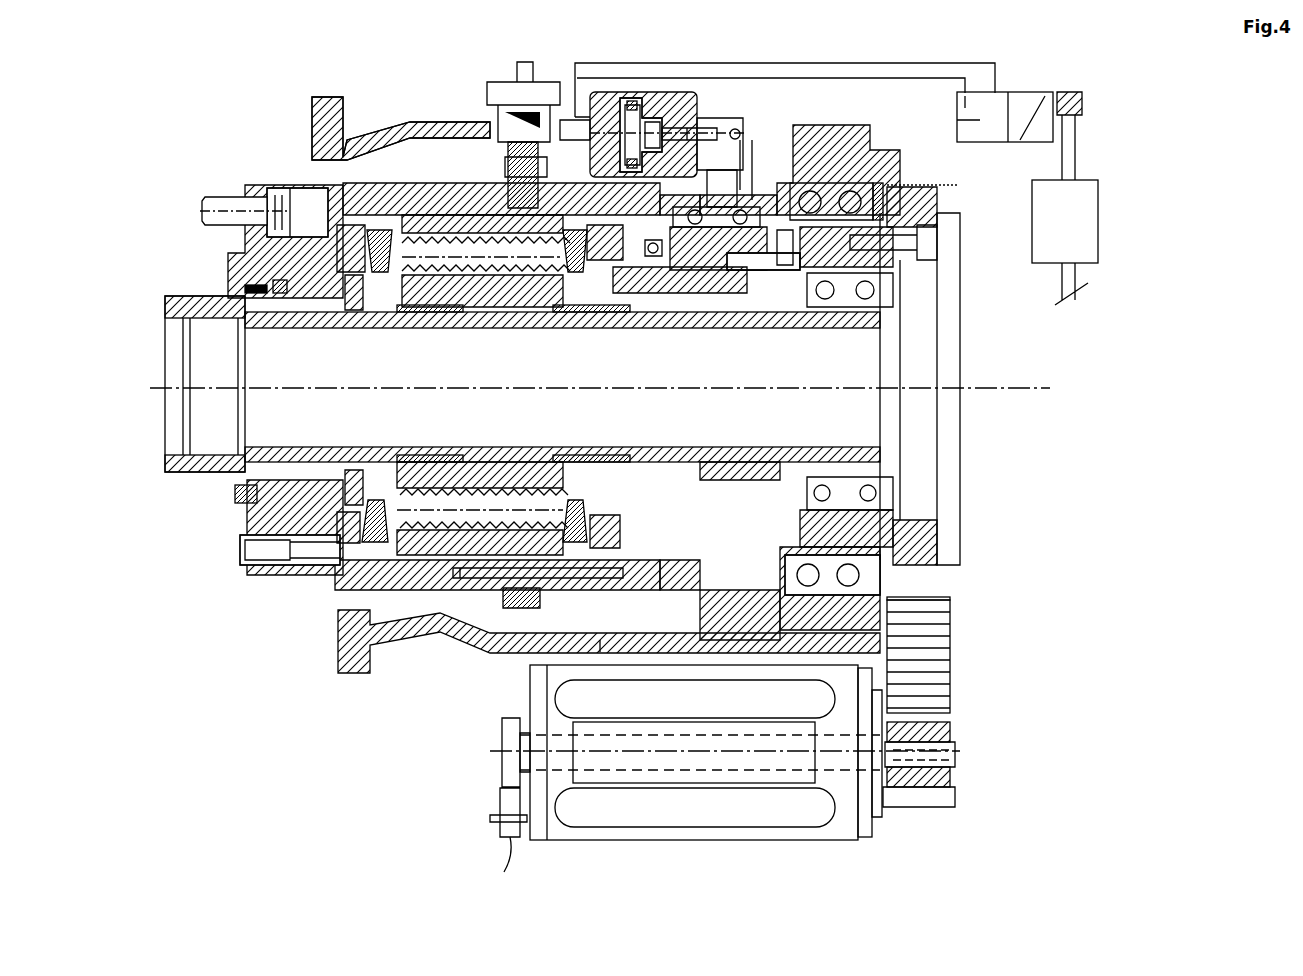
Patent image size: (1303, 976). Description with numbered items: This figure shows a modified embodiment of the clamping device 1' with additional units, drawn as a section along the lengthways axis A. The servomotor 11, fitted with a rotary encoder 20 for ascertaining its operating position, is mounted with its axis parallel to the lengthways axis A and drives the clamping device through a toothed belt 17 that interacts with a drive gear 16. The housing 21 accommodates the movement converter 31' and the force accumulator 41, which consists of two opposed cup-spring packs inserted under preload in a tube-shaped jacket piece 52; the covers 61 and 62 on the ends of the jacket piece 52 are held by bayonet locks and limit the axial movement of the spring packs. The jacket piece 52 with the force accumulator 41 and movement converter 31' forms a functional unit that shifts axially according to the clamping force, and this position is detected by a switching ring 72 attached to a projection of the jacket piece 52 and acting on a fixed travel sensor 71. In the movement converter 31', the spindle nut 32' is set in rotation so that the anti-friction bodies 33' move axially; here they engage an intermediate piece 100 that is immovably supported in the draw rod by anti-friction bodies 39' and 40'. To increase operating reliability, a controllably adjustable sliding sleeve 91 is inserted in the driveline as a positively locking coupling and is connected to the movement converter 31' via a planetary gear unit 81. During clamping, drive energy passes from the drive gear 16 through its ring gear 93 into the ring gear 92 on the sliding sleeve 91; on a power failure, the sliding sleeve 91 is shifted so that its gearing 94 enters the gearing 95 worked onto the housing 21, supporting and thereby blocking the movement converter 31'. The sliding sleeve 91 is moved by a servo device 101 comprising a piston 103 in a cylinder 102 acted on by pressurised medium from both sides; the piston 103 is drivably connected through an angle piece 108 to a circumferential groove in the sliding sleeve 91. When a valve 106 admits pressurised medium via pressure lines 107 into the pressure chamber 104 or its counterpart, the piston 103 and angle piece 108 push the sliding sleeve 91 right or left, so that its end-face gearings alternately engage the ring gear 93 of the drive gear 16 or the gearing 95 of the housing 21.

The clamping device 1' is at (522, 514).
The servomotor 11 is at (645, 838).
The drive gear 16 is at (955, 200).
The toothed belt 17 is at (955, 685).
The rotary encoder 20 is at (500, 802).
The housing 21 is at (375, 180).
The movement converter 31' is at (366, 384).
The spindle nut 32' is at (480, 385).
The anti-friction bodies 33' is at (513, 382).
The anti-friction bodies 39' is at (384, 386).
The anti-friction bodies 40' is at (786, 411).
The force accumulator 41 is at (333, 257).
The jacket piece 52 is at (440, 213).
The cover 61 is at (260, 540).
The cover 62 is at (595, 562).
The travel sensor 71 is at (505, 115).
The switching ring 72 is at (578, 600).
The planetary gear unit 81 is at (575, 655).
The sliding sleeve 91 is at (762, 250).
The ring gear 92 is at (775, 150).
The ring gear 93 is at (815, 262).
The gearing 94 is at (690, 205).
The gearing 95 is at (716, 122).
The intermediate piece 100 is at (440, 560).
The servo device 101 is at (1092, 130).
The cylinder 102 is at (608, 110).
The piston 103 is at (640, 108).
The pressure chamber 104 is at (618, 125).
The valve 106 is at (1025, 92).
The pressure lines 107 is at (913, 68).
The angle piece 108 is at (750, 265).
The lengthways axis A is at (855, 395).